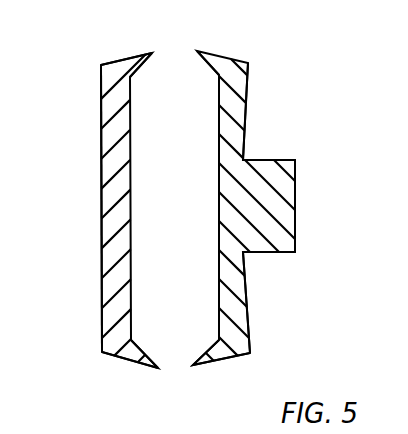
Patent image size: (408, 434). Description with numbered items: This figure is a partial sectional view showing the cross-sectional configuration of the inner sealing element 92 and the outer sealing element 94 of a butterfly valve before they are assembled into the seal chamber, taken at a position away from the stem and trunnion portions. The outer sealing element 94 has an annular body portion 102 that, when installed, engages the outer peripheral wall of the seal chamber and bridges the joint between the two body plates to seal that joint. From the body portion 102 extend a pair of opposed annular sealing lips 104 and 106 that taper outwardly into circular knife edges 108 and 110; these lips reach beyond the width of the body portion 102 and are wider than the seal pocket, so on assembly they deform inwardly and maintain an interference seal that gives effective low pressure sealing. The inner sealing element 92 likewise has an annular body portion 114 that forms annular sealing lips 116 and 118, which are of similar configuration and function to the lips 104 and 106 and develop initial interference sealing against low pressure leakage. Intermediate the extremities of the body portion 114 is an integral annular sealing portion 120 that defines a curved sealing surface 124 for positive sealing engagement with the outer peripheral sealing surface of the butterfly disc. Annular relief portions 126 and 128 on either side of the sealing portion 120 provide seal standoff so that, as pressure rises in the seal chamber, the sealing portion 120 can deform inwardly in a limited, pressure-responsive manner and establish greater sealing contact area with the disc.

The inner sealing element 92 is at (250, 88).
The outer sealing element 94 is at (102, 168).
The annular body portion 102 is at (108, 257).
The annular sealing lip 104 is at (130, 352).
The annular sealing lip 106 is at (135, 32).
The circular knife edge 108 is at (158, 368).
The circular knife edge 110 is at (150, 53).
The annular body portion 114 is at (233, 130).
The annular sealing lip 116 is at (218, 350).
The annular sealing lip 118 is at (208, 70).
The annular integral sealing portion 120 is at (282, 188).
The curved sealing surface 124 is at (295, 230).
The annular relief portion 126 is at (248, 272).
The annular relief portion 128 is at (243, 148).